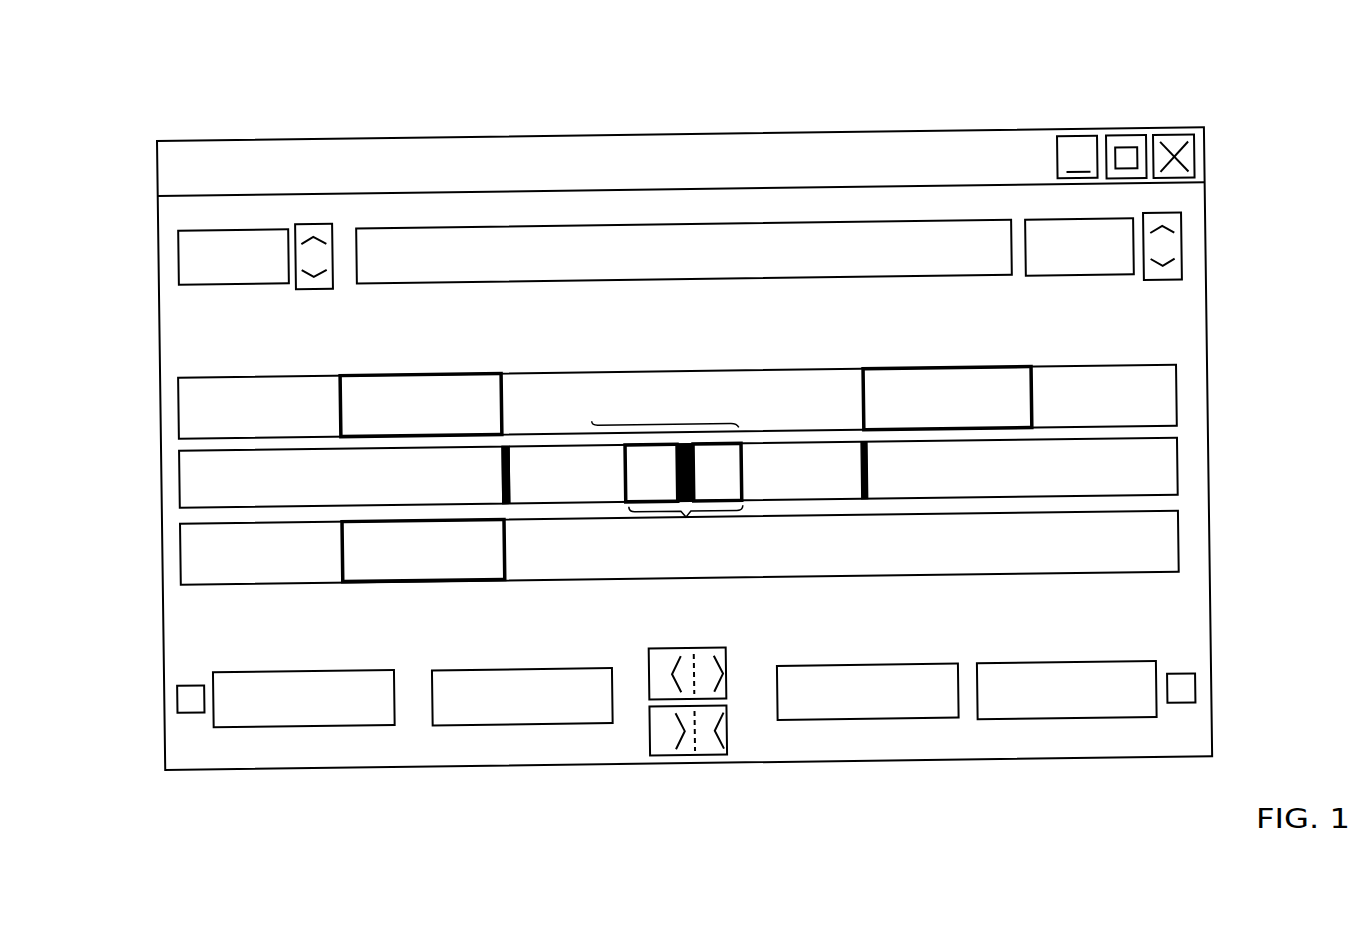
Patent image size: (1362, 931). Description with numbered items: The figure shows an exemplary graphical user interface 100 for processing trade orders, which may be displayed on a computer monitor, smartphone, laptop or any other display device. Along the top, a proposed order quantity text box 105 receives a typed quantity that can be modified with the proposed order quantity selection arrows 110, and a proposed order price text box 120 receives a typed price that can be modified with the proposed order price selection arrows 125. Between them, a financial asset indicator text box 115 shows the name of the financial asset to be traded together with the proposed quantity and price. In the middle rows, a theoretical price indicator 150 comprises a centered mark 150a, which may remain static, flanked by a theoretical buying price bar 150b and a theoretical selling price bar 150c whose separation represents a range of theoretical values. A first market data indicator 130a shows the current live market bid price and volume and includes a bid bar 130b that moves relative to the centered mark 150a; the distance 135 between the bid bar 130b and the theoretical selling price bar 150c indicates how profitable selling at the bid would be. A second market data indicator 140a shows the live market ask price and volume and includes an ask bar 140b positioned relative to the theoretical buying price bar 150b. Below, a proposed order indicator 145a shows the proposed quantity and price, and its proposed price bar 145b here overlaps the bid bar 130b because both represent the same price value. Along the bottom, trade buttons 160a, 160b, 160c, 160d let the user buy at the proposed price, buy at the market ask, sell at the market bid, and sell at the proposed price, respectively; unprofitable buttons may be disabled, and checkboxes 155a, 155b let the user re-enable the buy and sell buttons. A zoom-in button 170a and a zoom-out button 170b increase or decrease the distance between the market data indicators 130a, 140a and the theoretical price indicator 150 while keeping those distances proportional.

The graphical user interface 100 is at (1281, 150).
The proposed order quantity text box 105 is at (230, 232).
The proposed order quantity selection arrows 110 is at (312, 223).
The financial asset indicator text box 115 is at (590, 227).
The proposed order price text box 120 is at (1040, 220).
The proposed order price selection arrows 125 is at (1170, 247).
The first market data indicator 130a is at (393, 382).
The bid bar 130b is at (502, 467).
The distance 135 is at (592, 422).
The second market data indicator 140a is at (978, 373).
The ask bar 140b is at (860, 467).
The proposed order indicator 145a is at (343, 572).
The proposed price bar 145b is at (508, 487).
The theoretical price indicator 150 is at (685, 520).
The centered mark 150a is at (693, 477).
The theoretical buying price bar 150b is at (623, 487).
The theoretical selling price bar 150c is at (742, 487).
The checkbox 155a is at (180, 698).
The checkbox 155b is at (1195, 688).
The trade button 160a is at (298, 725).
The trade button 160b is at (472, 720).
The trade button 160c is at (885, 718).
The trade button 160d is at (1057, 717).
The zoom-in button 170a is at (650, 742).
The zoom-out button 170b is at (727, 688).